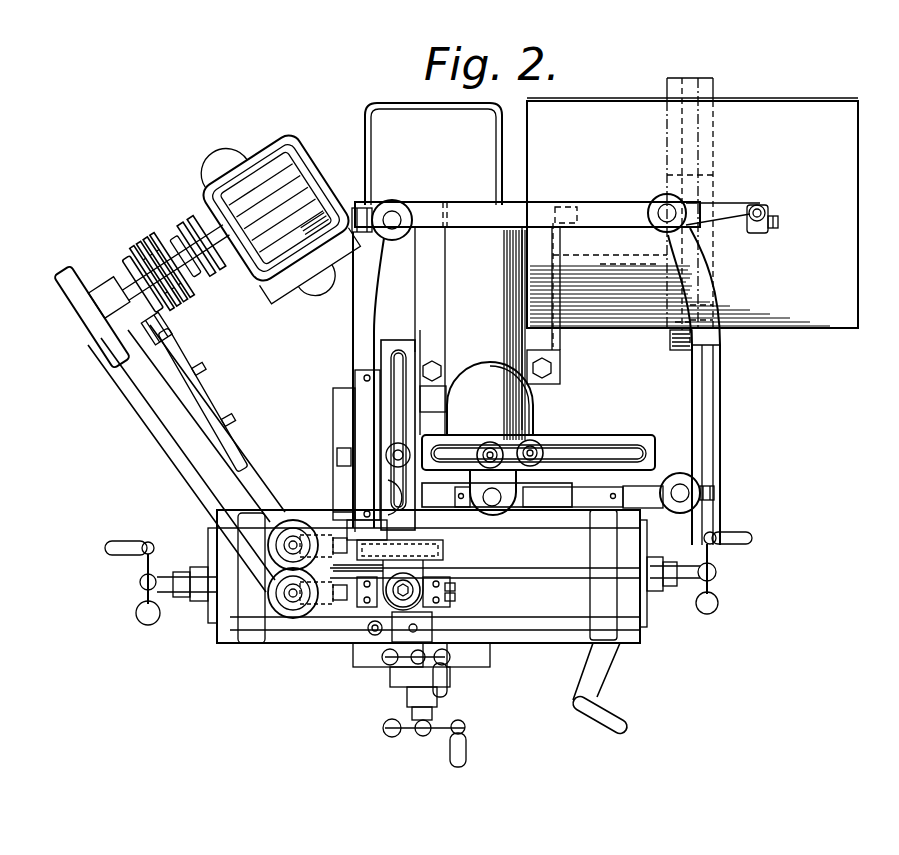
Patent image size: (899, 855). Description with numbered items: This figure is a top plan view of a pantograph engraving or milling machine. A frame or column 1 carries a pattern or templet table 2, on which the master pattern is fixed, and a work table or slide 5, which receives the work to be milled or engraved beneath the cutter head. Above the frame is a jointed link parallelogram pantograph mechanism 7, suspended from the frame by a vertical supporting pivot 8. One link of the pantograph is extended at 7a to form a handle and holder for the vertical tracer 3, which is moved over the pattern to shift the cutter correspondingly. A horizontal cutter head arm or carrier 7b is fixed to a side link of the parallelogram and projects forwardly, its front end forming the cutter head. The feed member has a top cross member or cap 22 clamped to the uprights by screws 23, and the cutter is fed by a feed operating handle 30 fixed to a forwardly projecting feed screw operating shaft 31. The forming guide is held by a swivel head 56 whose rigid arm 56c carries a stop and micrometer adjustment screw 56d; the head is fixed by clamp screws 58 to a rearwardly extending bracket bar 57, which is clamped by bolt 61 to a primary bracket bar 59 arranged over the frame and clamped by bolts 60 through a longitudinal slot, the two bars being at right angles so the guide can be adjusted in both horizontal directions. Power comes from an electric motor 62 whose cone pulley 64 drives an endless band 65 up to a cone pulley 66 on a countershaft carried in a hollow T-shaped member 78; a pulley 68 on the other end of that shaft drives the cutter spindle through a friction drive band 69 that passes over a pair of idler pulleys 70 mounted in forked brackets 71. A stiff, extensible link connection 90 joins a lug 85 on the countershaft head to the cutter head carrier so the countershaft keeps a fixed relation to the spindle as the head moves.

The frame or column 1 is at (524, 412).
The pattern or templet table 2 is at (763, 112).
The tracer 3 is at (769, 212).
The work table or slide 5 is at (542, 603).
The pantograph mechanism 7 is at (465, 217).
The extended link or rod 7a is at (737, 207).
The cutter head arm or carrier 7b is at (367, 530).
The vertical supporting pivot 8 is at (494, 506).
The top rigid cross member or cap 22 is at (455, 596).
The screws 23 is at (455, 585).
The cutter feed operating handle 30 is at (453, 690).
The feed screw operating shaft 31 is at (400, 673).
The swivel head 56 is at (440, 558).
The rigid arm 56c is at (403, 567).
The stop and micrometer adjustment screw 56d is at (433, 580).
The bracket arm or bar 57 is at (407, 362).
The clamp screws or bolts 58 is at (407, 585).
The primary bracket arm or bar 59 is at (592, 446).
The bolts 60 is at (528, 441).
The bolt 61 is at (388, 450).
The electric motor 62 is at (265, 175).
The cone pulley 64 is at (206, 212).
The endless friction band, cord or belt 65 is at (184, 225).
The cone pulley 66 is at (160, 243).
The pulley 68 is at (100, 300).
The friction drive band 69 is at (196, 462).
The guide or idler pulleys 70 is at (290, 522).
The yoke or forked brackets 71 is at (312, 532).
The T-shaped member 78 is at (147, 278).
The lug 85 is at (163, 323).
The link connection 90 is at (198, 411).